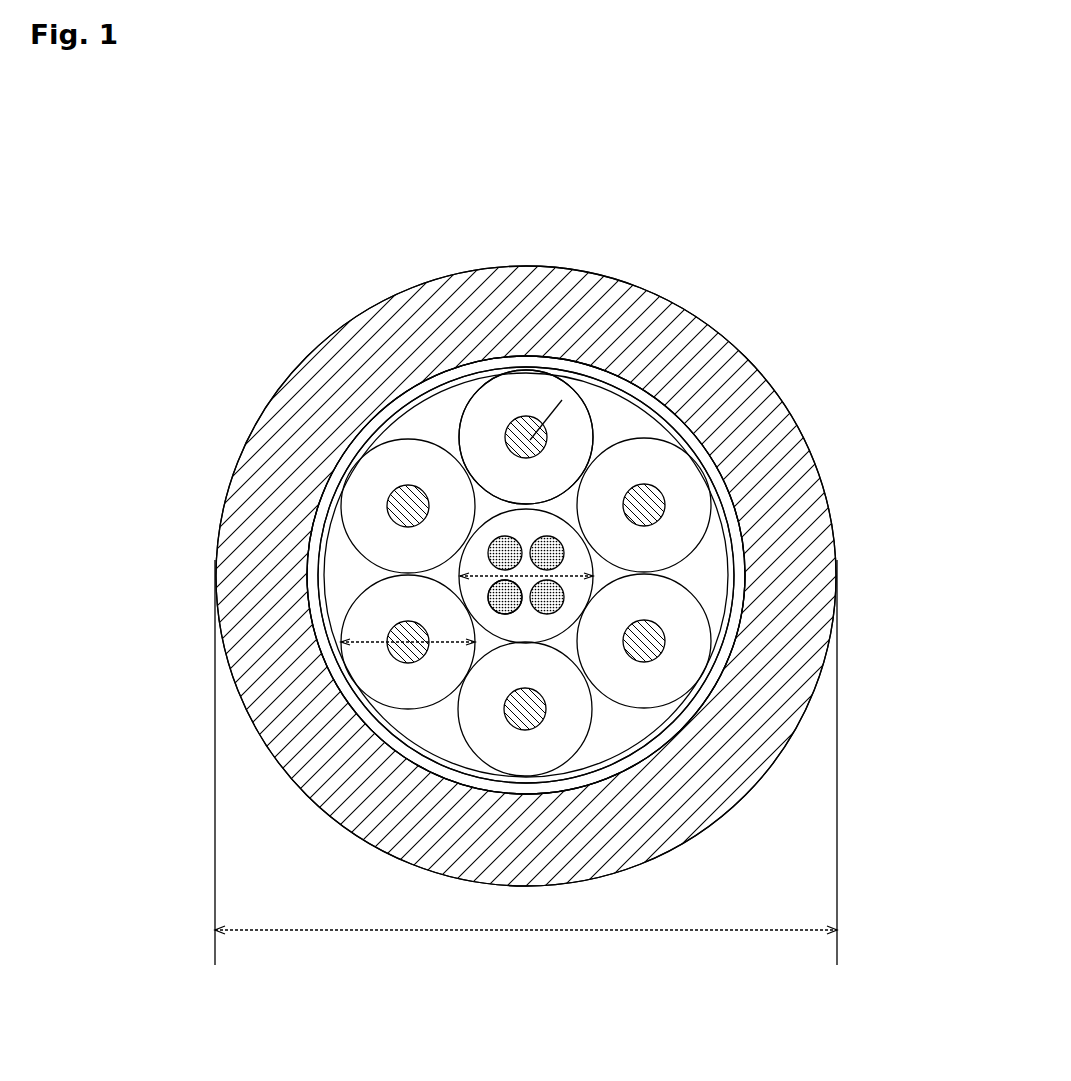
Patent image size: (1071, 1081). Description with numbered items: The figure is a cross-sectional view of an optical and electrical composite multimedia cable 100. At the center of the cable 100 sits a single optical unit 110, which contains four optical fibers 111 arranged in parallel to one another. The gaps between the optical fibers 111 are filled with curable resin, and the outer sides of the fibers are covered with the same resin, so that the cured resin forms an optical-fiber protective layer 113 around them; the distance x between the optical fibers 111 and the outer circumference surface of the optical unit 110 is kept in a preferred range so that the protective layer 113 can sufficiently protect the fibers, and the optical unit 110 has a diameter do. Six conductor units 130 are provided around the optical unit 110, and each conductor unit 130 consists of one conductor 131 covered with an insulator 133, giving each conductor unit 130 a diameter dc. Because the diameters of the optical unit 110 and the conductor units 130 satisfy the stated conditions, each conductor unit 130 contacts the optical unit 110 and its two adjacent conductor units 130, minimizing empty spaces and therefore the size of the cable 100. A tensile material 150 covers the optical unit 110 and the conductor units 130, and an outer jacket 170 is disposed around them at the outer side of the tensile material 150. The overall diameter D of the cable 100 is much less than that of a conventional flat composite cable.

The optical and electrical composite multimedia cable 100 is at (292, 222).
The optical unit 110 is at (534, 393).
The optical fibers 111 is at (489, 546).
The optical-fiber protective layer 113 is at (372, 455).
The conductor unit 130 is at (597, 430).
The conductor 131 is at (640, 400).
The insulator 133 is at (543, 353).
The tensile material 150 is at (723, 487).
The outer jacket 170 is at (788, 527).
The diameter of the cable D is at (526, 771).
The diameter of the optical unit do is at (528, 572).
The diameter of the conductor unit dc is at (400, 655).
The distance between the optical fibers and the outer circumference surface of the o x is at (487, 616).